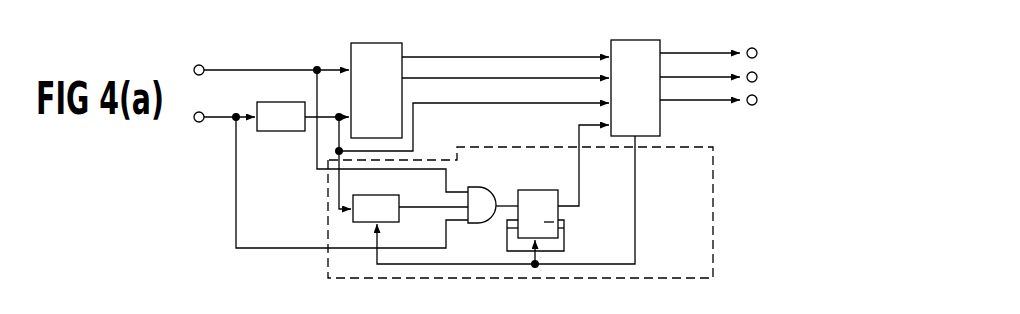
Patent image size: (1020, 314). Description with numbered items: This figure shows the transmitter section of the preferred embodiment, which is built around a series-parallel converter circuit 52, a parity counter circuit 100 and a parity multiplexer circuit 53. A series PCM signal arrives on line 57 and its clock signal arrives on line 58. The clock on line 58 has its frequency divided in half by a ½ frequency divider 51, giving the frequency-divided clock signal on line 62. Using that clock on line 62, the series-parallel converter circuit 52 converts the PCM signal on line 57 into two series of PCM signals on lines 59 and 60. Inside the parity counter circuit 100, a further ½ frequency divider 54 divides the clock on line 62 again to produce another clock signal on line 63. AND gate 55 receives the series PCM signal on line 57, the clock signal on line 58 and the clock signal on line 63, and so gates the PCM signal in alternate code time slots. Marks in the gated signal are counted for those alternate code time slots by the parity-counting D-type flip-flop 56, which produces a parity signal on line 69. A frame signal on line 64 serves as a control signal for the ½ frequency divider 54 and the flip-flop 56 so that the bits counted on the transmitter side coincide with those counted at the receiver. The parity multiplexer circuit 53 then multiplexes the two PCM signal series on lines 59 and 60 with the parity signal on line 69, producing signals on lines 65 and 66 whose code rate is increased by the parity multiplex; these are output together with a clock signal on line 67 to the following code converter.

The ½ frequency divider 51 is at (277, 132).
The series-parallel converter circuit 52 is at (378, 43).
The parity multiplexer circuit 53 is at (627, 40).
The ½ frequency divider 54 is at (388, 195).
The AND gate 55 is at (476, 187).
The parity-counting D-type flip-flop 56 is at (530, 190).
The series PCM signal line 57 is at (229, 70).
The clock signal line 58 is at (209, 117).
The PCM signal line 59 is at (493, 57).
The PCM signal line 60 is at (497, 78).
The frequency-divided clock signal line 62 is at (321, 115).
The clock signal line 63 is at (403, 209).
The frame signal line 64 is at (636, 184).
The output signal line 65 is at (690, 53).
The output signal line 66 is at (690, 77).
The clock signal line 67 is at (690, 100).
The parity signal line 69 is at (580, 157).
The parity counter circuit 100 is at (716, 218).